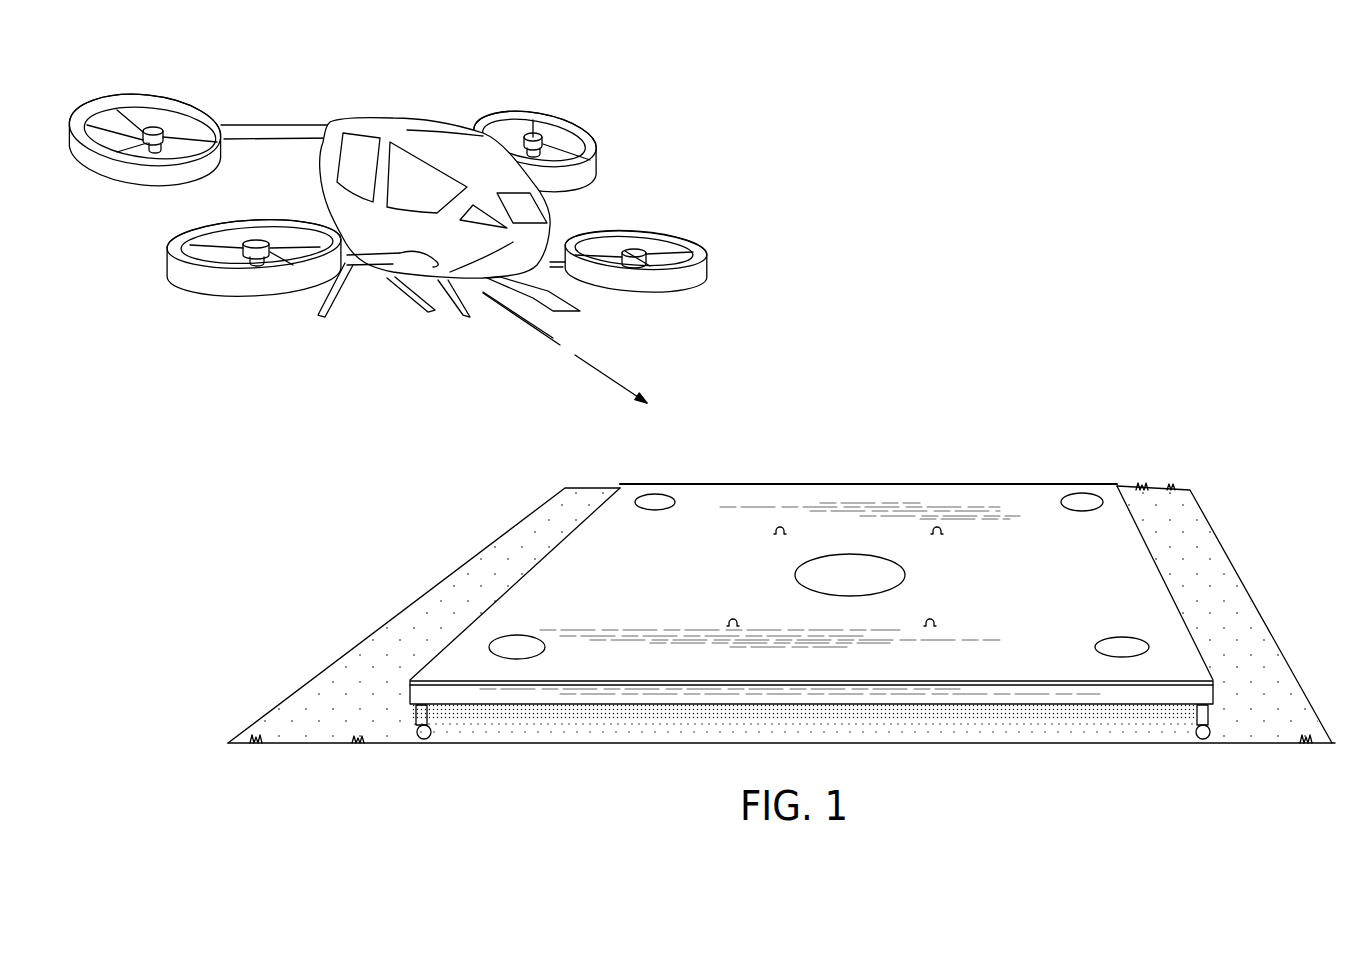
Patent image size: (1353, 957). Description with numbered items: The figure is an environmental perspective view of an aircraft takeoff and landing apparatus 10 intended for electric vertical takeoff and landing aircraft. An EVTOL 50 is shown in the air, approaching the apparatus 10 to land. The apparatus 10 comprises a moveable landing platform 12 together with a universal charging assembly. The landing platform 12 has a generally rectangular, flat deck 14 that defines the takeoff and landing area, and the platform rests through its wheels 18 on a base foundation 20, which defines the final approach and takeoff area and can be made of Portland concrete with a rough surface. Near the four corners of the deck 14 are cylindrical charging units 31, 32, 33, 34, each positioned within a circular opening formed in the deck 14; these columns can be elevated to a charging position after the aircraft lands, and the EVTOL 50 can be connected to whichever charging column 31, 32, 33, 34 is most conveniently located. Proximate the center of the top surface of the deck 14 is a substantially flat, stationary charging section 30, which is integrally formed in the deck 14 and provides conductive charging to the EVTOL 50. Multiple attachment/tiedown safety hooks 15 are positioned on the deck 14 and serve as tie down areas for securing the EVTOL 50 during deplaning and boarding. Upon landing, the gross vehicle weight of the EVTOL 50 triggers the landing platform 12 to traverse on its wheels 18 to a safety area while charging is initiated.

The aircraft takeoff and landing apparatus 10 is at (1139, 312).
The landing platform 12 is at (1030, 485).
The deck 14 is at (1110, 596).
The safety hooks 15 is at (780, 528).
The wheels 18 is at (418, 748).
The base foundation 20 is at (473, 590).
The charging section 30 is at (813, 575).
The charging unit 31 is at (1128, 648).
The charging unit 32 is at (500, 645).
The charging unit 33 is at (1085, 504).
The charging unit 34 is at (658, 502).
The EVTOL 50 is at (527, 207).